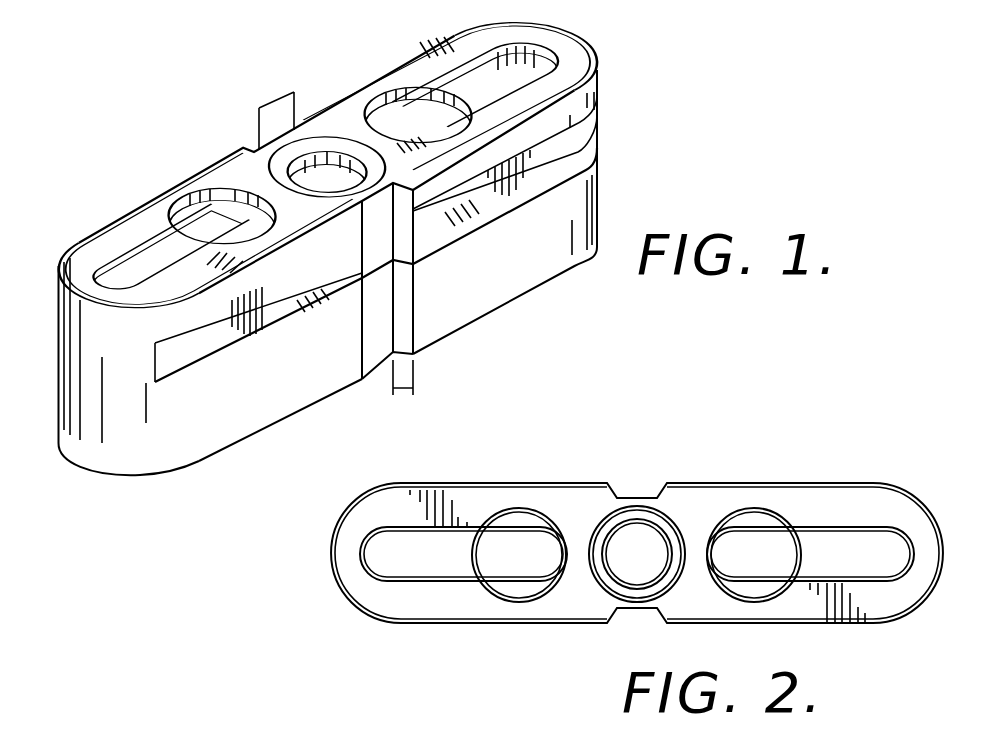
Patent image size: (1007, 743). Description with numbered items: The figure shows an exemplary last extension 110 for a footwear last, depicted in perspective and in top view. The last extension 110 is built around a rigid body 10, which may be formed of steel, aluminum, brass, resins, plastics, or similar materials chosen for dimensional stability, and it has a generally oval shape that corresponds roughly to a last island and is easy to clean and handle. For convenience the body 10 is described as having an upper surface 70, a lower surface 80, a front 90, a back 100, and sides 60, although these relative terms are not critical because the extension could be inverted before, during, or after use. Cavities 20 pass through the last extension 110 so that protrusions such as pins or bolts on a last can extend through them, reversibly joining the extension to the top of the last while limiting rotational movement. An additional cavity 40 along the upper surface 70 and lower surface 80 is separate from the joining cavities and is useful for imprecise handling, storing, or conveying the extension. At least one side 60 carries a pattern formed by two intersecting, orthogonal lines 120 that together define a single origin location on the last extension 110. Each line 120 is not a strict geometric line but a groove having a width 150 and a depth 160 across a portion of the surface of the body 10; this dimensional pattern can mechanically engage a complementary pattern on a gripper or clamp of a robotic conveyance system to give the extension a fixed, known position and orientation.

In FIG. 1, the body 10 is at (541, 263).
In FIG. 2, the body 10 is at (637, 553).
In FIG. 1, the cavities 20 is at (236, 212).
In FIG. 2, the cavities 20 is at (557, 548).
In FIG. 1, the additional cavity 40 is at (338, 185).
In FIG. 2, the additional cavity 40 is at (662, 543).
In FIG. 1, the sides 60 is at (187, 182).
In FIG. 1, the upper surface 70 is at (572, 58).
In FIG. 1, the lower surface 80 is at (482, 315).
In FIG. 1, the front 90 is at (594, 104).
In FIG. 1, the back 100 is at (84, 447).
In FIG. 1, the last extension 110 is at (99, 137).
In FIG. 1, the line 120 is at (570, 150).
In FIG. 1, the width 150 is at (292, 129).
In FIG. 1, the depth 160 is at (397, 389).